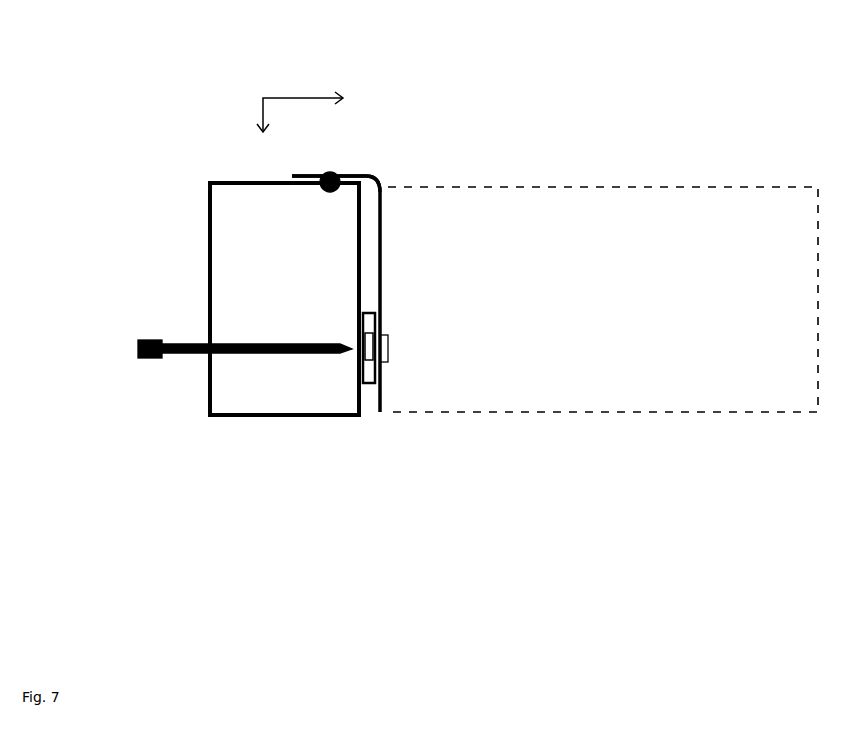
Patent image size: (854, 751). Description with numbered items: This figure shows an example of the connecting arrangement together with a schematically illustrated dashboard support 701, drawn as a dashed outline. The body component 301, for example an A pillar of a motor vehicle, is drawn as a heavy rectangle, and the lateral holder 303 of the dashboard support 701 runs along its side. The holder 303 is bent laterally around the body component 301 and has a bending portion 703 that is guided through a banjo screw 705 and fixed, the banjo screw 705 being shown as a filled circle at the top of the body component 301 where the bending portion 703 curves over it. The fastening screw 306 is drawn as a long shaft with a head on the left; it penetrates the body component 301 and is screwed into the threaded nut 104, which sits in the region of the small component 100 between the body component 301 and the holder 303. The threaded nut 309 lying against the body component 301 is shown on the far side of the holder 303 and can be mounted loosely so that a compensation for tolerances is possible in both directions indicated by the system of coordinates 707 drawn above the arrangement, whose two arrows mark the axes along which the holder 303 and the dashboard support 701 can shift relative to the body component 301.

The body component 301 is at (309, 416).
The lateral holder 303 is at (381, 275).
The bending portion 703 is at (357, 176).
The banjo screw 705 is at (330, 172).
The dashboard support 701 is at (638, 205).
The device 100 is at (389, 323).
The threaded nut 104 is at (360, 333).
The threaded nut 309 is at (390, 347).
The fastening screw 306 is at (182, 343).
The system of coordinates 707 is at (265, 90).